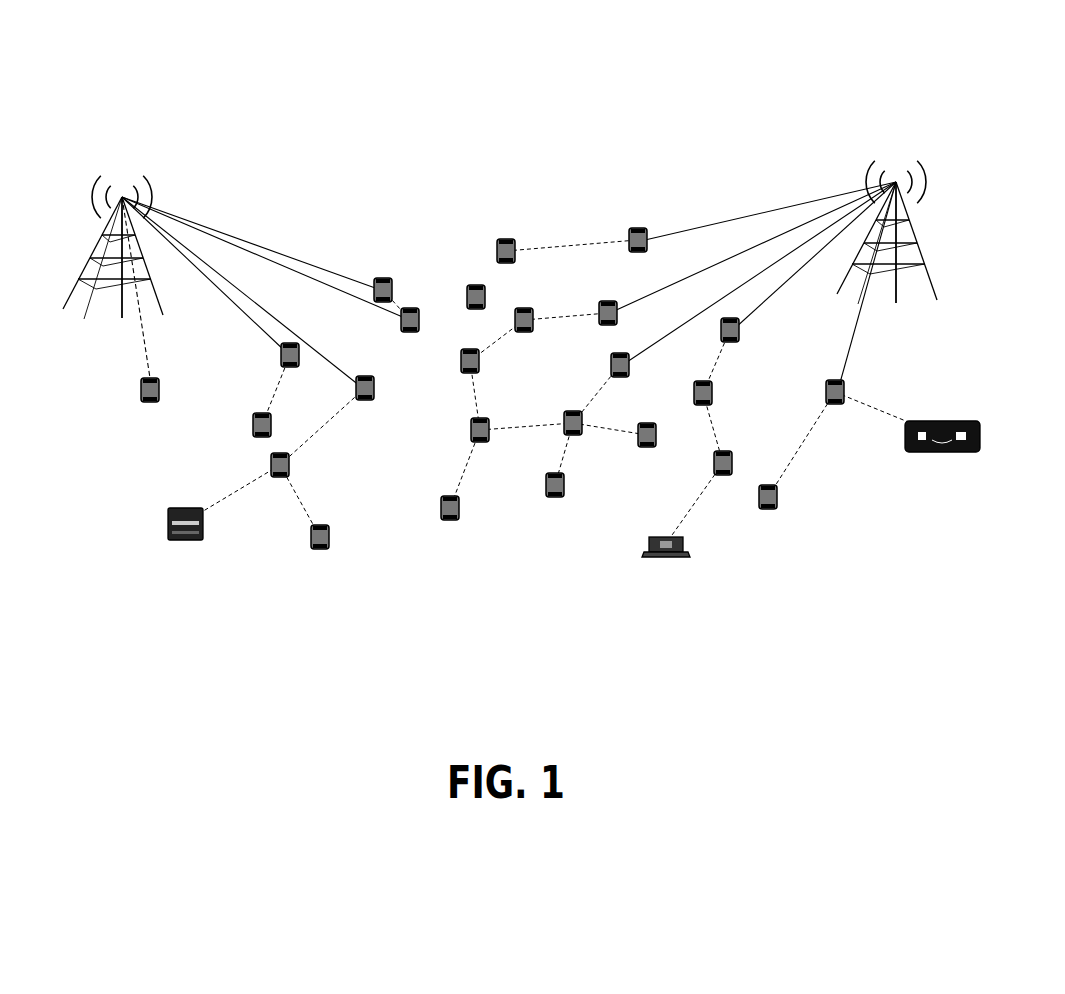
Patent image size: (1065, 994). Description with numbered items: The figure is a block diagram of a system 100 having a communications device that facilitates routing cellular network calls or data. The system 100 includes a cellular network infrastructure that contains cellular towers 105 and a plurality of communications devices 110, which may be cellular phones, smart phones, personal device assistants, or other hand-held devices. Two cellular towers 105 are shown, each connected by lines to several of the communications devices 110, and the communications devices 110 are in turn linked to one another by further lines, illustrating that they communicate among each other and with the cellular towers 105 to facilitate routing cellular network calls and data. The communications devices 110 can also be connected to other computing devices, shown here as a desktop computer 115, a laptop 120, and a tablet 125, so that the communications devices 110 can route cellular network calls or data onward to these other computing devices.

The system 100 is at (667, 103).
The cellular tower 105 is at (950, 146).
The communications device 110 is at (641, 229).
The desktop computer 115 is at (980, 422).
The laptop 120 is at (681, 540).
The tablet 125 is at (183, 511).